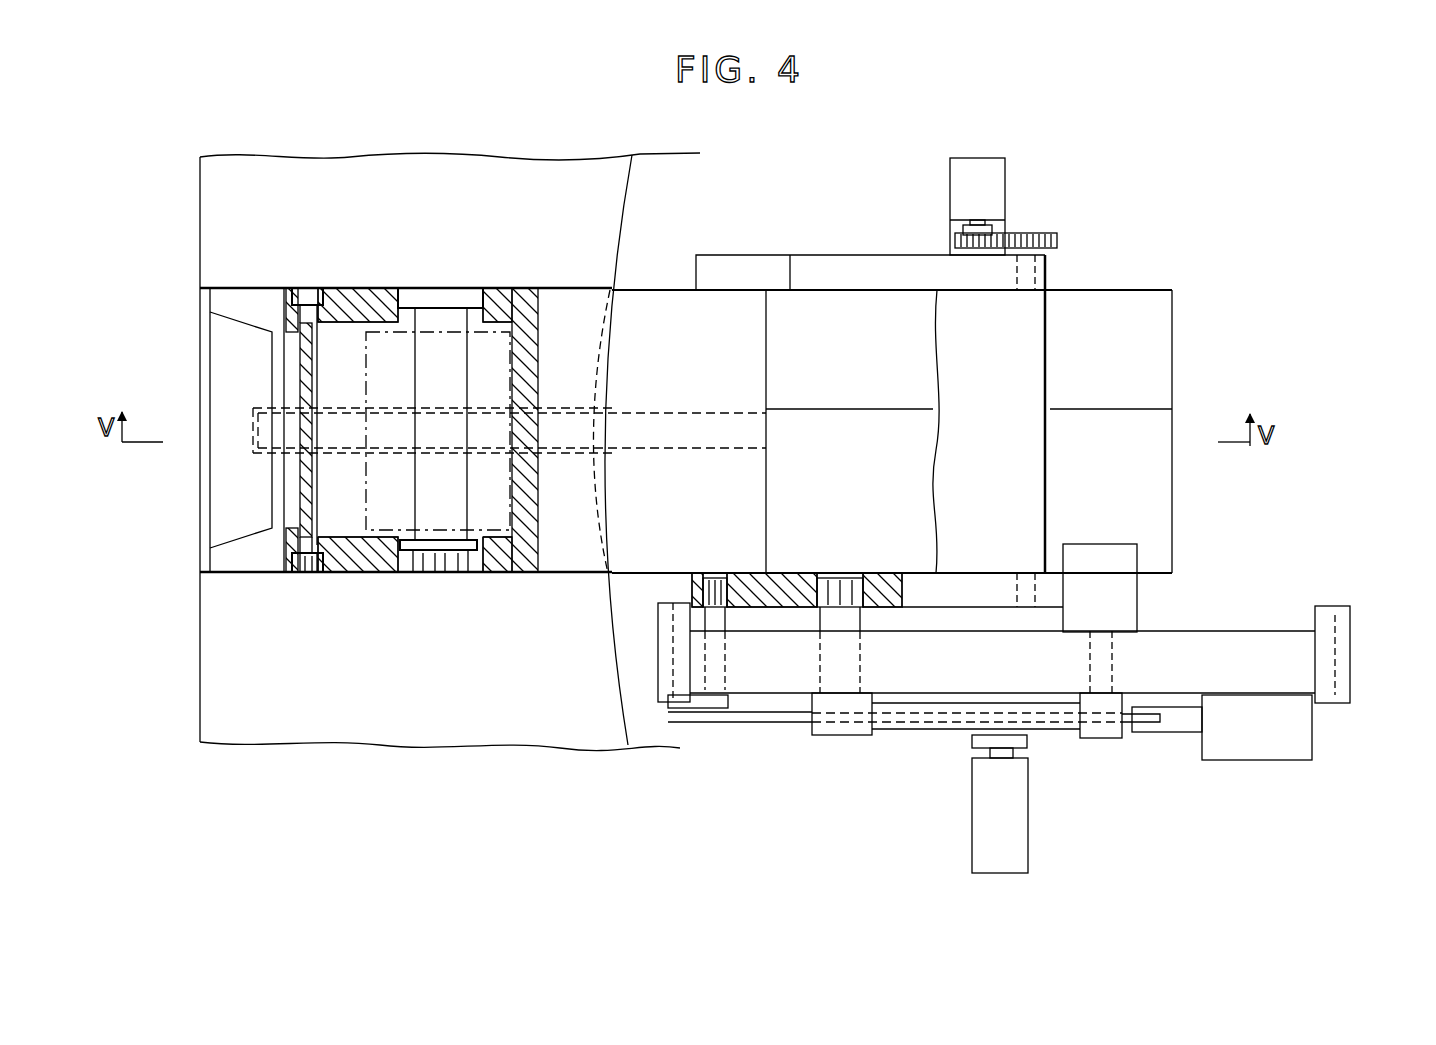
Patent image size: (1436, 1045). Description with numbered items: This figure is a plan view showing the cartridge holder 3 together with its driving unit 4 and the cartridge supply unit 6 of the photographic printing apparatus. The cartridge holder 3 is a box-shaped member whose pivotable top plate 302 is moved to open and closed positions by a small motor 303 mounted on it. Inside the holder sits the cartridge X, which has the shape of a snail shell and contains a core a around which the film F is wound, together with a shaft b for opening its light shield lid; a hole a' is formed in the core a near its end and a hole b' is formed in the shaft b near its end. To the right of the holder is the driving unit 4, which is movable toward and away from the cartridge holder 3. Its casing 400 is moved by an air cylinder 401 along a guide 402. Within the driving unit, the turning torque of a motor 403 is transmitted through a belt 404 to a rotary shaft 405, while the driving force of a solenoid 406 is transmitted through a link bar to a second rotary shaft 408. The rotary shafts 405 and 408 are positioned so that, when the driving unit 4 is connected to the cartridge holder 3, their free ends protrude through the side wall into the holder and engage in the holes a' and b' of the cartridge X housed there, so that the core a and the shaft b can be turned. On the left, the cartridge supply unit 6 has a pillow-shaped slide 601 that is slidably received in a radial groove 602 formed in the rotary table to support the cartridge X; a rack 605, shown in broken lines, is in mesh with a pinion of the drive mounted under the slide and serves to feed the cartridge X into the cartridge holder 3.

The cartridge holder 3 is at (1120, 280).
The driving unit 4 is at (1270, 605).
The cartridge supply unit 6 is at (543, 588).
The top plate 302 is at (1040, 360).
The small motor 303 is at (993, 175).
The casing 400 is at (1285, 657).
The air cylinder 401 is at (1025, 842).
The guide 402 is at (657, 660).
The motor 403 is at (1125, 560).
The belt 404 is at (923, 728).
The rotary shaft 405 is at (842, 675).
The solenoid 406 is at (1280, 752).
The rotary shaft 408 is at (712, 705).
The pillow-shaped slide 601 is at (565, 310).
The radial groove 602 is at (868, 445).
The rack 605 is at (710, 422).
The core a is at (440, 377).
The hole a' is at (438, 596).
The shaft b is at (307, 379).
The hole b' is at (307, 596).
The cartridge X is at (365, 560).
The film F is at (492, 515).